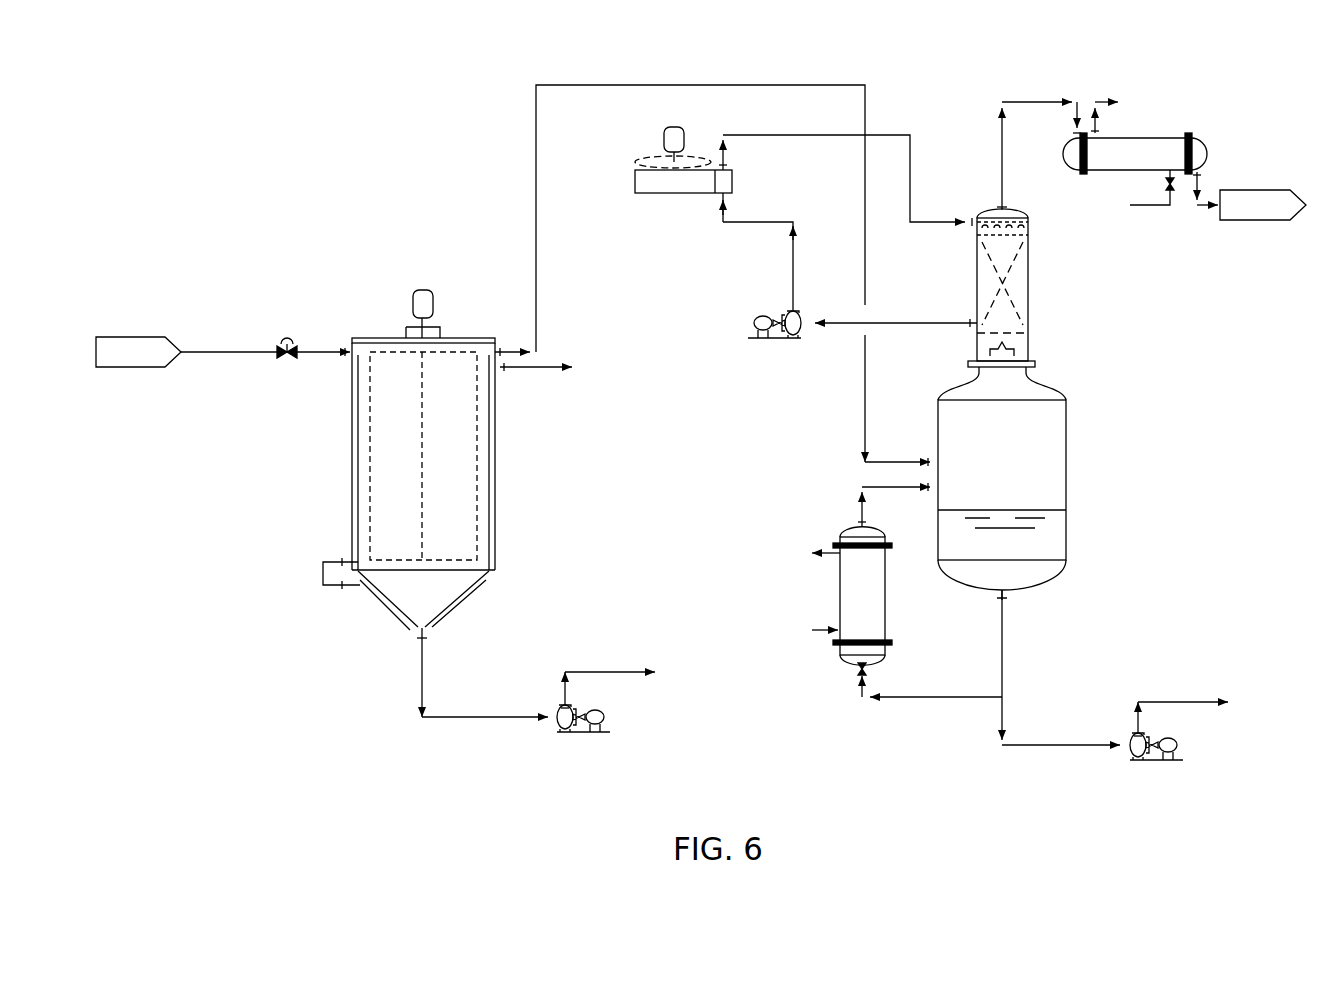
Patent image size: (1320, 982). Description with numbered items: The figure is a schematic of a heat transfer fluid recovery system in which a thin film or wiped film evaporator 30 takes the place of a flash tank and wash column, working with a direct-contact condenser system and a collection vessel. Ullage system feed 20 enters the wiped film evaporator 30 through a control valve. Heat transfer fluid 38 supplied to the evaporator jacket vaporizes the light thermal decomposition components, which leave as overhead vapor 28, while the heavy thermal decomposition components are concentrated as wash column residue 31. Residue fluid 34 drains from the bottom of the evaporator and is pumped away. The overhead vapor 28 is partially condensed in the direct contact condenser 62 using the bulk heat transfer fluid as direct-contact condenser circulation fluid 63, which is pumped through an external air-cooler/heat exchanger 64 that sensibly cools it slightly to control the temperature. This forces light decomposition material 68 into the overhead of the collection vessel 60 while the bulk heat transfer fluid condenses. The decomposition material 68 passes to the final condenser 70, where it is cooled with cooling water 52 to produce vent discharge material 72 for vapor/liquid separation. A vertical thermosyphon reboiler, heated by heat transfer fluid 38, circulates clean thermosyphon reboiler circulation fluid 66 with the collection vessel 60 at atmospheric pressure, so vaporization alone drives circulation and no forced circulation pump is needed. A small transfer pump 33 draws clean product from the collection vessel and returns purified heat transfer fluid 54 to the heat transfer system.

The ullage system feed 20 is at (223, 352).
The overhead vapor 28 is at (712, 262).
The wiped film evaporator 30 is at (409, 460).
The wash column residue 31 is at (623, 683).
The small transfer pump 33 is at (1156, 764).
The residue fluid 34 is at (513, 680).
The heat transfer fluid 38 is at (356, 650).
The cooling water 52 is at (1068, 417).
The purified heat transfer fluid 54 is at (1194, 712).
The collection vessel 60 is at (1002, 483).
The direct contact condenser 62 is at (925, 288).
The direct-contact condenser circulation fluid 63 is at (845, 166).
The air-cooler/heat exchanger 64 is at (718, 232).
The thermosyphon reboiler circulation fluid-clean fluid 66 is at (930, 590).
The decomposition material 68 is at (1028, 156).
The final condenser 70 is at (1135, 153).
The vent discharge material 72 is at (1249, 196).